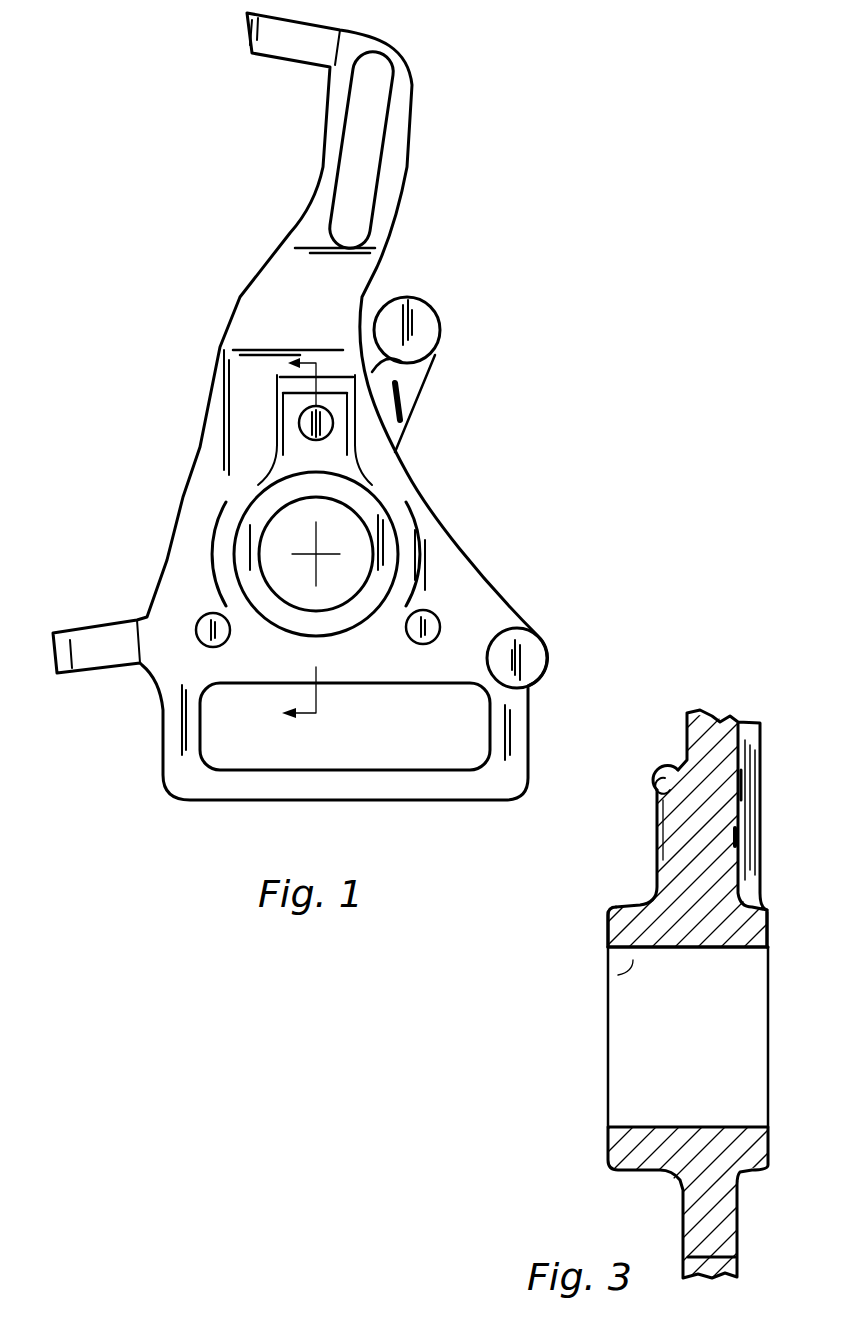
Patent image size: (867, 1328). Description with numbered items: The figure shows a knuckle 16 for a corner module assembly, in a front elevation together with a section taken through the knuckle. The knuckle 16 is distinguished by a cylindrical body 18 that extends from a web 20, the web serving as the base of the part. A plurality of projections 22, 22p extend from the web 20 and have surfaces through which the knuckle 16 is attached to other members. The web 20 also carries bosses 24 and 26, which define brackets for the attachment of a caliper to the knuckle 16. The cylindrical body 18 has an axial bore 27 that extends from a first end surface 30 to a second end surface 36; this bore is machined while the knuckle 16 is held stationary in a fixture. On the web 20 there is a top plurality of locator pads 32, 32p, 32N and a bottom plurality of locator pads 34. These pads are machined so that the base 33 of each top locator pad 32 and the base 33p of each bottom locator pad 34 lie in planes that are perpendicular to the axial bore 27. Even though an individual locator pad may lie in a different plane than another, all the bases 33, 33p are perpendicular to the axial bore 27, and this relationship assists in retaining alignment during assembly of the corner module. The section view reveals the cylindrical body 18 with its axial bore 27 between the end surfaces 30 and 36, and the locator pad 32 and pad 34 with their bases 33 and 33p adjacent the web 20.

In FIG. 1, the knuckle 16 is at (130, 409).
In FIG. 3, the knuckle 16 is at (568, 1154).
In FIG. 1, the cylindrical body 18 is at (380, 497).
In FIG. 3, the cylindrical body 18 is at (633, 897).
In FIG. 1, the web 20 is at (373, 450).
In FIG. 3, the web 20 is at (712, 730).
In FIG. 1, the projection 22 is at (368, 48).
In FIG. 1, the projection 22p is at (118, 648).
In FIG. 1, the boss 24 is at (425, 312).
In FIG. 1, the boss 26 is at (547, 645).
In FIG. 1, the axial bore 27 is at (270, 512).
In FIG. 3, the axial bore 27 is at (625, 962).
In FIG. 3, the first end surface 30 is at (773, 913).
In FIG. 1, the top locator pad 32 is at (333, 415).
In FIG. 3, the top locator pad 32 is at (656, 808).
In FIG. 1, the top locator pad 32p is at (203, 618).
In FIG. 1, the top locator pad 32N is at (435, 618).
In FIG. 3, the base of top locator pad 33 is at (670, 768).
In FIG. 3, the base of bottom locator pad 33p is at (740, 834).
In FIG. 3, the bottom locator pad 34 is at (742, 808).
In FIG. 1, the second end surface 36 is at (253, 516).
In FIG. 3, the second end surface 36 is at (607, 915).